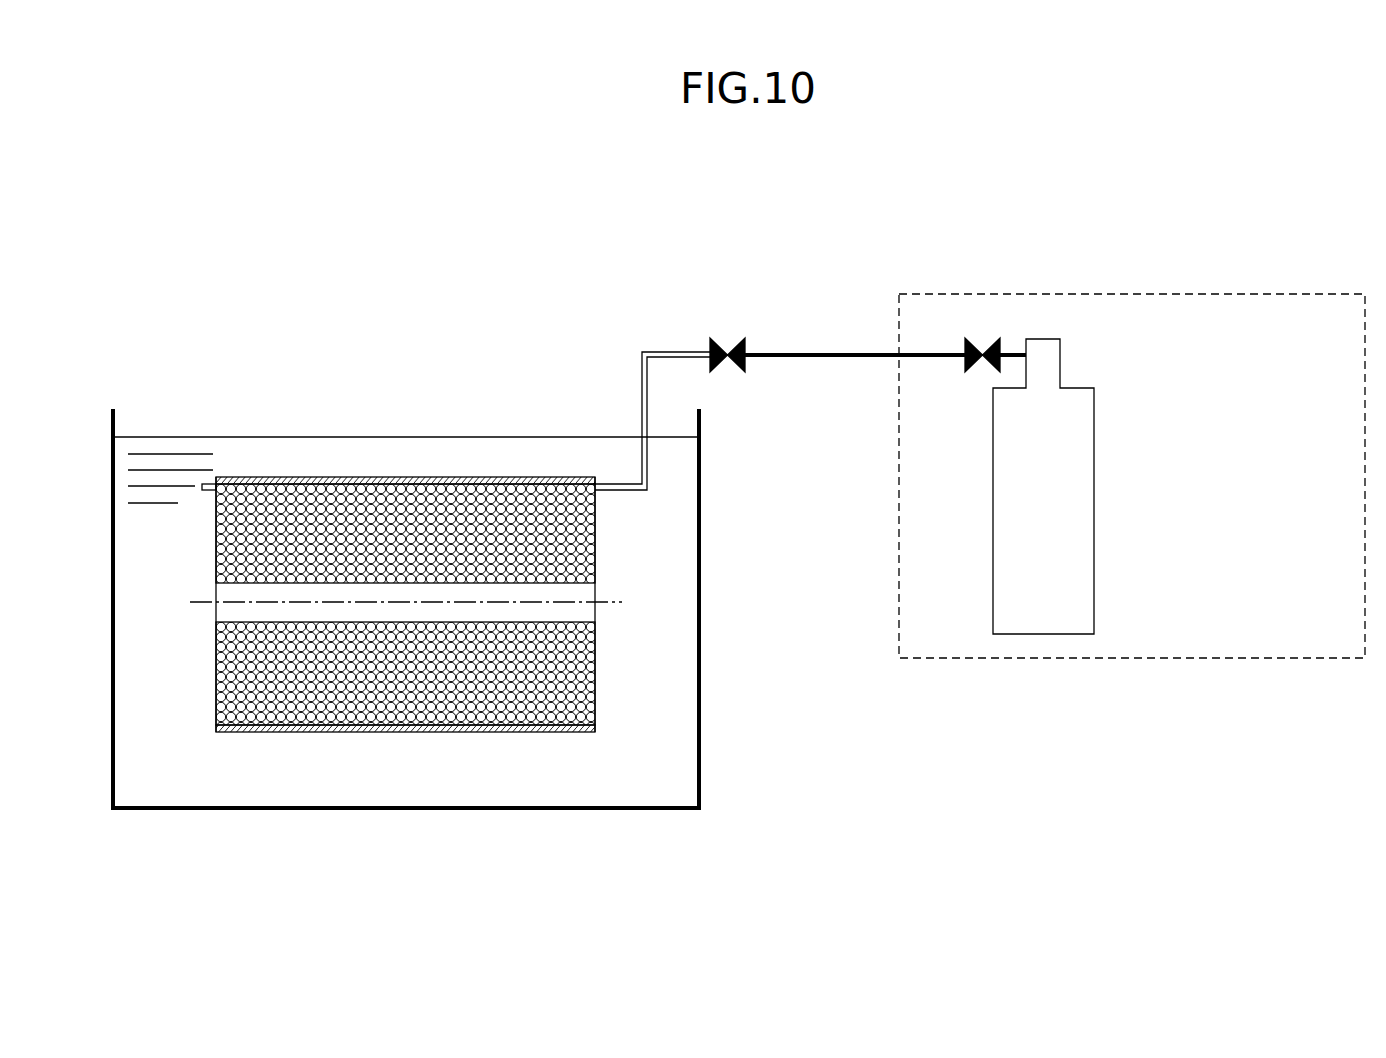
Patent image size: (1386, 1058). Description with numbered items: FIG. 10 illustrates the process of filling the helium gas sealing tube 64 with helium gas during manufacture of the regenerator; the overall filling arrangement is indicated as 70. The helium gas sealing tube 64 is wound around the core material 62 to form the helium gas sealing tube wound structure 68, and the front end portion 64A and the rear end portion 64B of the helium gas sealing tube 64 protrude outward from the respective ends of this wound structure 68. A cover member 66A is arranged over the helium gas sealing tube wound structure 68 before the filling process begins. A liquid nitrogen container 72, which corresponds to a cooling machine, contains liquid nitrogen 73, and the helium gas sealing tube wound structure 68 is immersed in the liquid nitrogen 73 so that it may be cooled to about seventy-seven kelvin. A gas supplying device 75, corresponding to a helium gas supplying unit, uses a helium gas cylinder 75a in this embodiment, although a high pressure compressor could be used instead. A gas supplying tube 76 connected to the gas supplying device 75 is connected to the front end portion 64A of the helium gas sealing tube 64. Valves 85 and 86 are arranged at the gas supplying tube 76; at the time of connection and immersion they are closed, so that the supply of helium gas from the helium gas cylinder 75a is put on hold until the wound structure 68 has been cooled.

The gas supply system 70 is at (953, 201).
The liquid nitrogen container 72 is at (705, 754).
The liquid nitrogen 73 is at (677, 626).
The core material 62 is at (405, 613).
The helium gas sealing tube 64 is at (490, 704).
The front end portion 64A is at (598, 483).
The rear end portion 64B is at (210, 484).
The cover member 66A is at (345, 478).
The helium gas sealing tube wound structure 68 is at (497, 505).
The gas supplying tube 76 is at (810, 360).
The valve 85 is at (975, 340).
The valve 86 is at (718, 340).
The gas supplying device 75 is at (1116, 293).
The helium gas cylinder 75a is at (1075, 497).